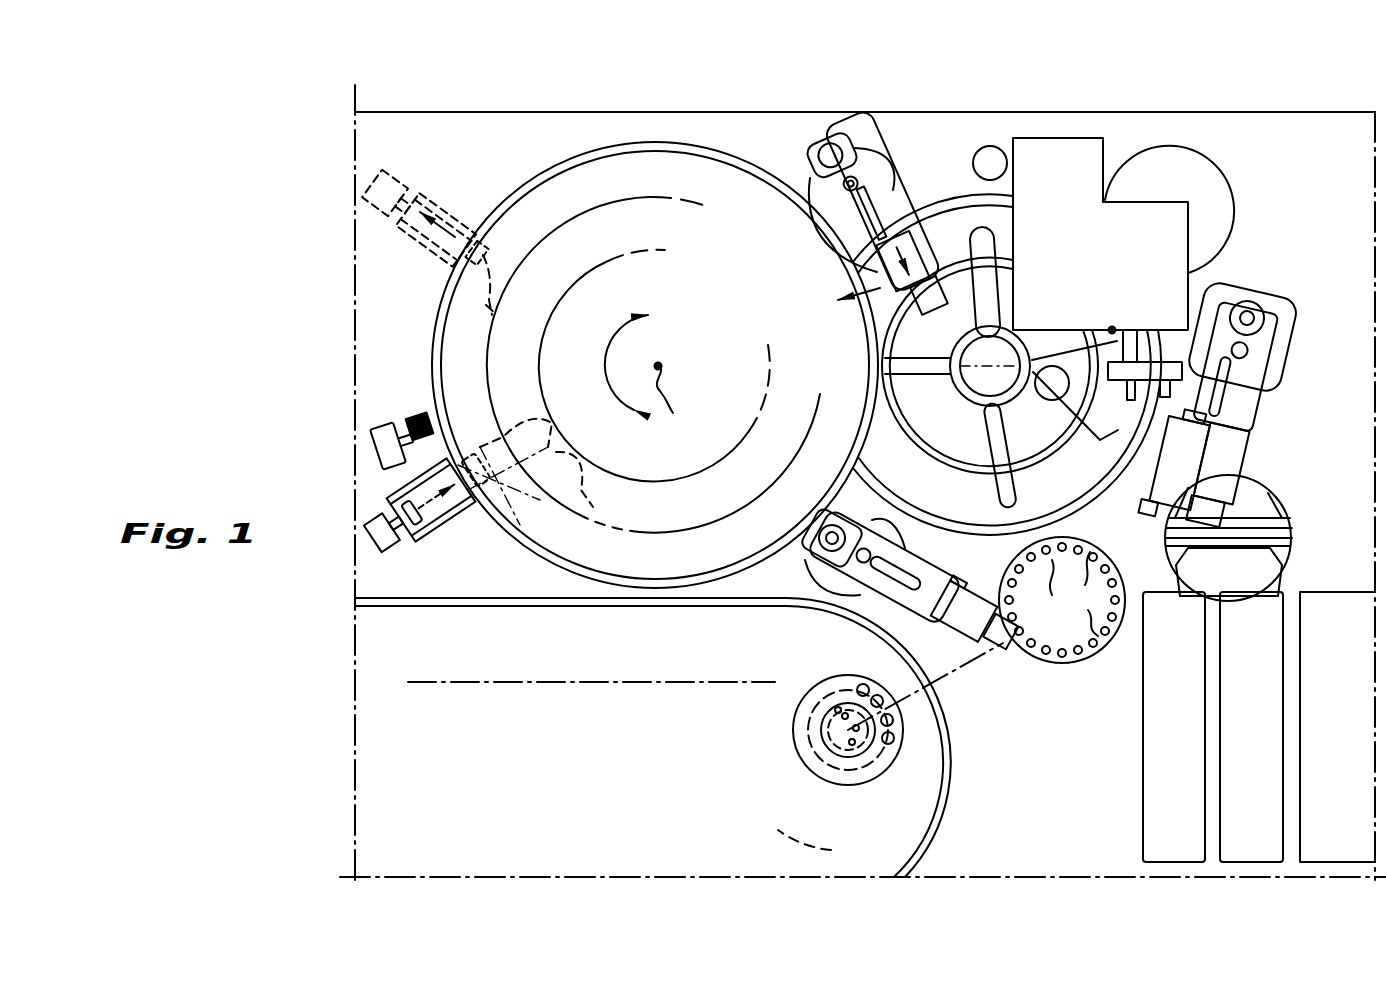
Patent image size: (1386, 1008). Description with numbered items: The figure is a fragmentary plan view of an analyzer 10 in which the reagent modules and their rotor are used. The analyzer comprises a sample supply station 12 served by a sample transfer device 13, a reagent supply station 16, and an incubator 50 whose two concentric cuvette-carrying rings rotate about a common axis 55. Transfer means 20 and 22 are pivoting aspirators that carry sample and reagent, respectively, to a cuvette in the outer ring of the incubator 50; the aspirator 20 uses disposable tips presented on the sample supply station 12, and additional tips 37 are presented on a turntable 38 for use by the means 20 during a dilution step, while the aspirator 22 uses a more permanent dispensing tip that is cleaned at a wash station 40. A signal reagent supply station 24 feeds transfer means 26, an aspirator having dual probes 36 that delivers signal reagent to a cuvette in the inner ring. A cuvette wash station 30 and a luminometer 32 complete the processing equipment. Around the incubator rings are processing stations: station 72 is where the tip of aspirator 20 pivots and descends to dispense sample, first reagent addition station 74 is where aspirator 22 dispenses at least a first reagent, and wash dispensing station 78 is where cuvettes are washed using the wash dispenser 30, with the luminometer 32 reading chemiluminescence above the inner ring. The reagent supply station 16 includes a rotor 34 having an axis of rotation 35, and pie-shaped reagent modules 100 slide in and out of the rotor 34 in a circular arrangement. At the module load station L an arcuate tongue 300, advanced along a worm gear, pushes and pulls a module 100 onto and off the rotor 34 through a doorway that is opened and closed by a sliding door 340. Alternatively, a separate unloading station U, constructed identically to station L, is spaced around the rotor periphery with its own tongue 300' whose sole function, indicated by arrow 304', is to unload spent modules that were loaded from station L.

The analyzer 10 is at (778, 95).
The sample supply station 12 is at (512, 782).
The sample transfer device 13 is at (800, 735).
The reagent supply station 16 is at (583, 262).
The transfer means 20 is at (857, 577).
The transfer means 22 is at (813, 172).
The signal reagent supply station 24 is at (1285, 570).
The transfer means 26 is at (1212, 445).
The cuvette wash station 30 is at (1140, 362).
The luminometer 32 is at (1185, 180).
The rotor 34 is at (690, 142).
The axis of rotation 35 is at (654, 378).
The dual probes 36 is at (1178, 526).
The tips 37 is at (1003, 643).
The turntable 38 is at (1062, 663).
The wash station 40 is at (995, 146).
The incubator 50 is at (1178, 398).
The common axis 55 is at (978, 355).
The station 72 is at (1022, 497).
The first reagent addition station 74 is at (968, 247).
The wash dispensing station 78 is at (1112, 330).
The reagent module 100 is at (533, 458).
The tongue 300 is at (424, 545).
The tongue 300' is at (525, 290).
The arrow 304' is at (435, 171).
The sliding door 340 is at (427, 415).
The module load station L is at (452, 520).
The unloading station U is at (405, 250).